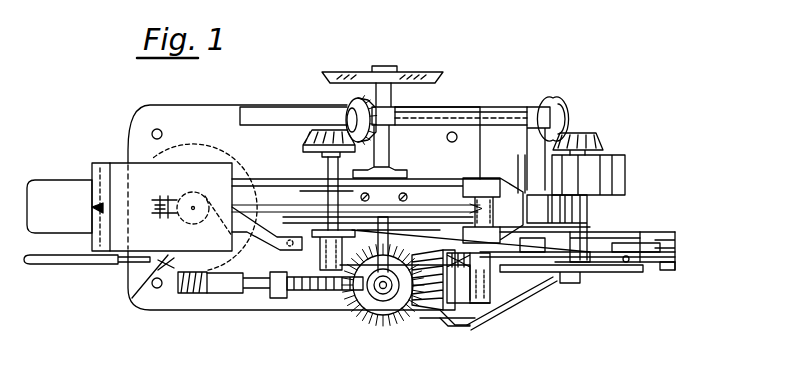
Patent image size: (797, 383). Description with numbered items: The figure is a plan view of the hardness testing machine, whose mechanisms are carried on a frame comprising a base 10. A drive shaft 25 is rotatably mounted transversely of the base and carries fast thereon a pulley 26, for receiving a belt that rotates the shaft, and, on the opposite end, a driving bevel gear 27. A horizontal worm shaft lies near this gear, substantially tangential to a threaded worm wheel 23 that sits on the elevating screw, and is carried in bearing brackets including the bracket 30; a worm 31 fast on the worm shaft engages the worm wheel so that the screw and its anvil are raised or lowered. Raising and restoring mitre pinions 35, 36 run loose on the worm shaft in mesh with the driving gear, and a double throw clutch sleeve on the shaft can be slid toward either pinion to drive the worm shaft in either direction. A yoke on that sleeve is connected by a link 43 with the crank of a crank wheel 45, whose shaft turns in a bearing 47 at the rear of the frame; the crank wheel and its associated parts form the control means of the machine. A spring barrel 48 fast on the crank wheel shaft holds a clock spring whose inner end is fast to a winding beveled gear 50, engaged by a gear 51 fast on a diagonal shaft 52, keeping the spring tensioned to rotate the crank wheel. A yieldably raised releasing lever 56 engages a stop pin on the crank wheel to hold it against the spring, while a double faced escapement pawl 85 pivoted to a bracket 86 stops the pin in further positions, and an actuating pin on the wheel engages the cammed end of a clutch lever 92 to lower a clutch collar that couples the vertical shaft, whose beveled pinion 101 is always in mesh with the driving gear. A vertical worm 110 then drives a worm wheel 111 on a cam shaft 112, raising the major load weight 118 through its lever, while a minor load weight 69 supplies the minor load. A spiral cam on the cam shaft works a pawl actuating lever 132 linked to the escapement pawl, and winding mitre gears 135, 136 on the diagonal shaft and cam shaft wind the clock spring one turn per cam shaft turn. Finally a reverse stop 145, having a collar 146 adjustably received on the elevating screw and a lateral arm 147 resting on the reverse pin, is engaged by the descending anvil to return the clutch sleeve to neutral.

The base 10 is at (272, 309).
The threaded worm wheel 23 is at (134, 290).
The drive shaft 25 is at (395, 104).
The pulley 26 is at (408, 76).
The driving bevel gear 27 is at (318, 262).
The bearing bracket 30 is at (483, 300).
The worm 31 is at (188, 297).
The raising mitre pinion 35 is at (328, 318).
The restoring mitre pinion 36 is at (447, 322).
The link 43 is at (505, 310).
The crank wheel 45 is at (623, 273).
The bearing 47 is at (587, 223).
The spring barrel 48 is at (627, 176).
The winding beveled gear 50 is at (596, 143).
The gear 51 is at (560, 99).
The diagonal shaft 52 is at (502, 115).
The releasing lever 56 is at (140, 262).
The minor load weight 69 is at (68, 207).
The double faced escapement pawl 85 is at (640, 233).
The bracket 86 is at (637, 247).
The clutch lever 92 is at (477, 298).
The beveled pinion 101 is at (387, 310).
The vertical worm 110 is at (372, 310).
The worm wheel 111 is at (308, 302).
The cam shaft 112 is at (328, 165).
The major load weight 118 is at (171, 273).
The pawl actuating lever 132 is at (543, 247).
The winding mitre gear 135 is at (352, 103).
The winding mitre gear 136 is at (312, 140).
The reverse stop 145 is at (219, 197).
The collar 146 is at (175, 198).
The lateral arm 147 is at (211, 208).